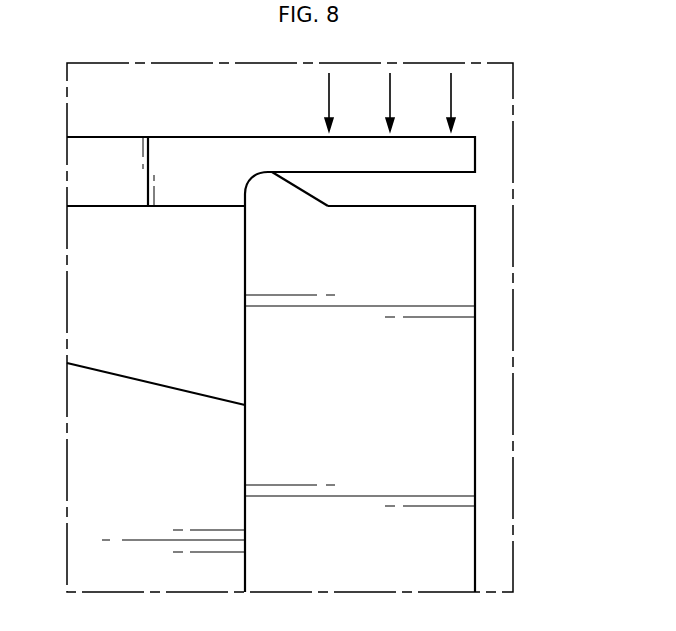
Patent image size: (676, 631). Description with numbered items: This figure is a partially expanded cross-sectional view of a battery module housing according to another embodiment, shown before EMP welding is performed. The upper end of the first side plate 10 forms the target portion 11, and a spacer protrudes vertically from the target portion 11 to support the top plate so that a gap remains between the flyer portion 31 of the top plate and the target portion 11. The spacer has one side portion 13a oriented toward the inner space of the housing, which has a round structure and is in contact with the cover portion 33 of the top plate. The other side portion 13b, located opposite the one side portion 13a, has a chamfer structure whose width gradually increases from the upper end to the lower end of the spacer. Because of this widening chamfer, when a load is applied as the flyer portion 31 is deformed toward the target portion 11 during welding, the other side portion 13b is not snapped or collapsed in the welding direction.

The first side plate 10 is at (490, 343).
The target portion 11 is at (415, 207).
The one side portion 13a is at (270, 188).
The other side portion 13b is at (309, 190).
The flyer portion 31 is at (423, 152).
The cover portion 33 is at (107, 150).